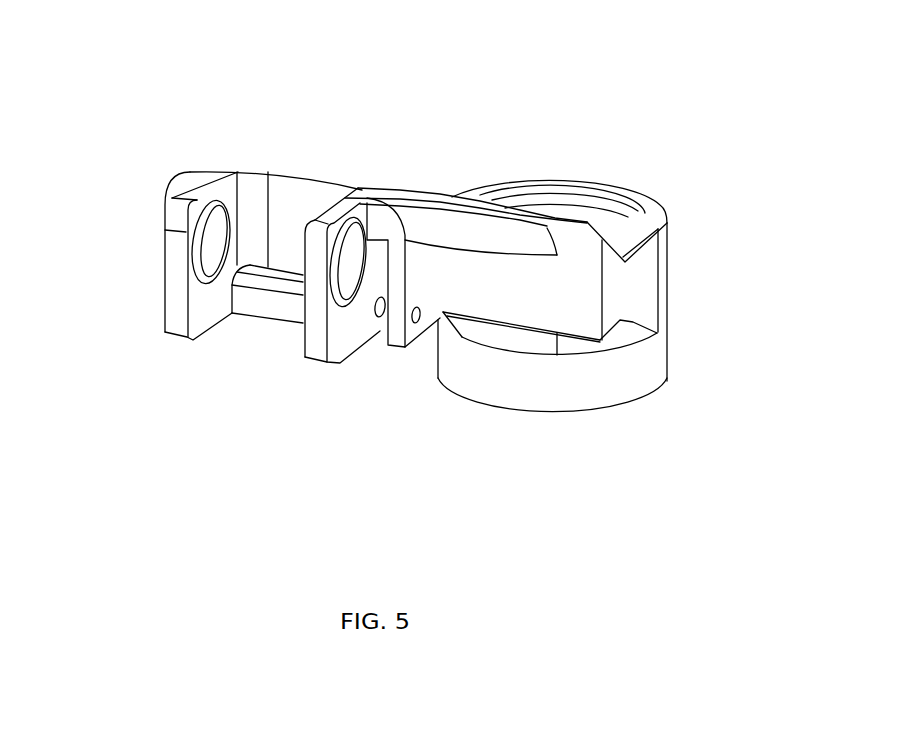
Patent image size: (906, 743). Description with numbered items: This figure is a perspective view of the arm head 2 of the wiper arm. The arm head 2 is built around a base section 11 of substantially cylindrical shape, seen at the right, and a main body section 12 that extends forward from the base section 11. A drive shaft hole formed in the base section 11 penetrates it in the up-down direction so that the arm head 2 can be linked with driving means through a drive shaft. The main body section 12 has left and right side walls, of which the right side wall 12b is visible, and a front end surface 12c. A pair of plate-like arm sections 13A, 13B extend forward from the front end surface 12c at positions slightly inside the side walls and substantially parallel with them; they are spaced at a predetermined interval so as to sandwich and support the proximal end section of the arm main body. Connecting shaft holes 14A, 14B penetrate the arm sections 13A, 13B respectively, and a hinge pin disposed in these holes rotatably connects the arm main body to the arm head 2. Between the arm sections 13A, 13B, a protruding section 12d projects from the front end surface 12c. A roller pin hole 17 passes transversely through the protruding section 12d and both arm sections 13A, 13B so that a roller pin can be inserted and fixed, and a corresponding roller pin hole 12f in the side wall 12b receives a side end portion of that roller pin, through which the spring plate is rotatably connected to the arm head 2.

The arm head 2 is at (505, 114).
The base section 11 is at (668, 350).
The main body section 12 is at (442, 208).
The side wall 12b is at (525, 292).
The front end surface 12c is at (292, 204).
The protruding section 12d is at (261, 312).
The roller pin hole 12f is at (418, 326).
The arm section 13A is at (165, 255).
The arm section 13B is at (342, 362).
The connecting shaft hole 14A is at (218, 227).
The connecting shaft hole 14B is at (360, 250).
The roller pin hole 17 is at (380, 320).